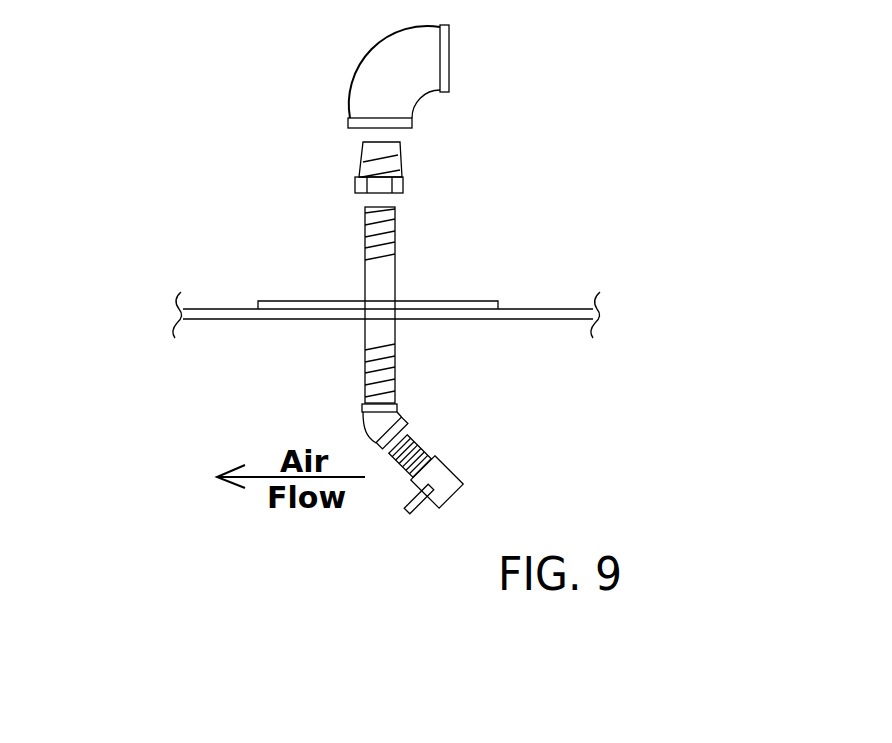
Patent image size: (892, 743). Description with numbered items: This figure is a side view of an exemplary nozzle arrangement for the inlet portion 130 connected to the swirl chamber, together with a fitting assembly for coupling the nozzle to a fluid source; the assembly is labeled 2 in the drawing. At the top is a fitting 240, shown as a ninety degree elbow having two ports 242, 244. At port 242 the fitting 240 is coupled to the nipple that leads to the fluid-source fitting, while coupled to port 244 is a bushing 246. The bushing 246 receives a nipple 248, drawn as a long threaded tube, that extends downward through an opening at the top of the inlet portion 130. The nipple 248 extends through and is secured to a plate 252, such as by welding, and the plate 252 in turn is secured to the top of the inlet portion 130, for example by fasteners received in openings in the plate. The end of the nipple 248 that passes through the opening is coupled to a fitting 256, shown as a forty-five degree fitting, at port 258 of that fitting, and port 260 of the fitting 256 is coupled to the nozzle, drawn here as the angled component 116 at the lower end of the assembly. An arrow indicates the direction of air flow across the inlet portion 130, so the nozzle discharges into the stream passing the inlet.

The vehicle / assembly 2 is at (282, 140).
The fitting 116 is at (438, 470).
The inlet portion 130 is at (550, 315).
The fitting 240 is at (418, 92).
The port 242 is at (450, 52).
The port 244 is at (358, 123).
The bushing 246 is at (358, 178).
The nipple 248 is at (365, 277).
The plate 252 is at (447, 302).
The fitting 256 is at (370, 438).
The port 258 is at (370, 402).
The port 260 is at (387, 448).